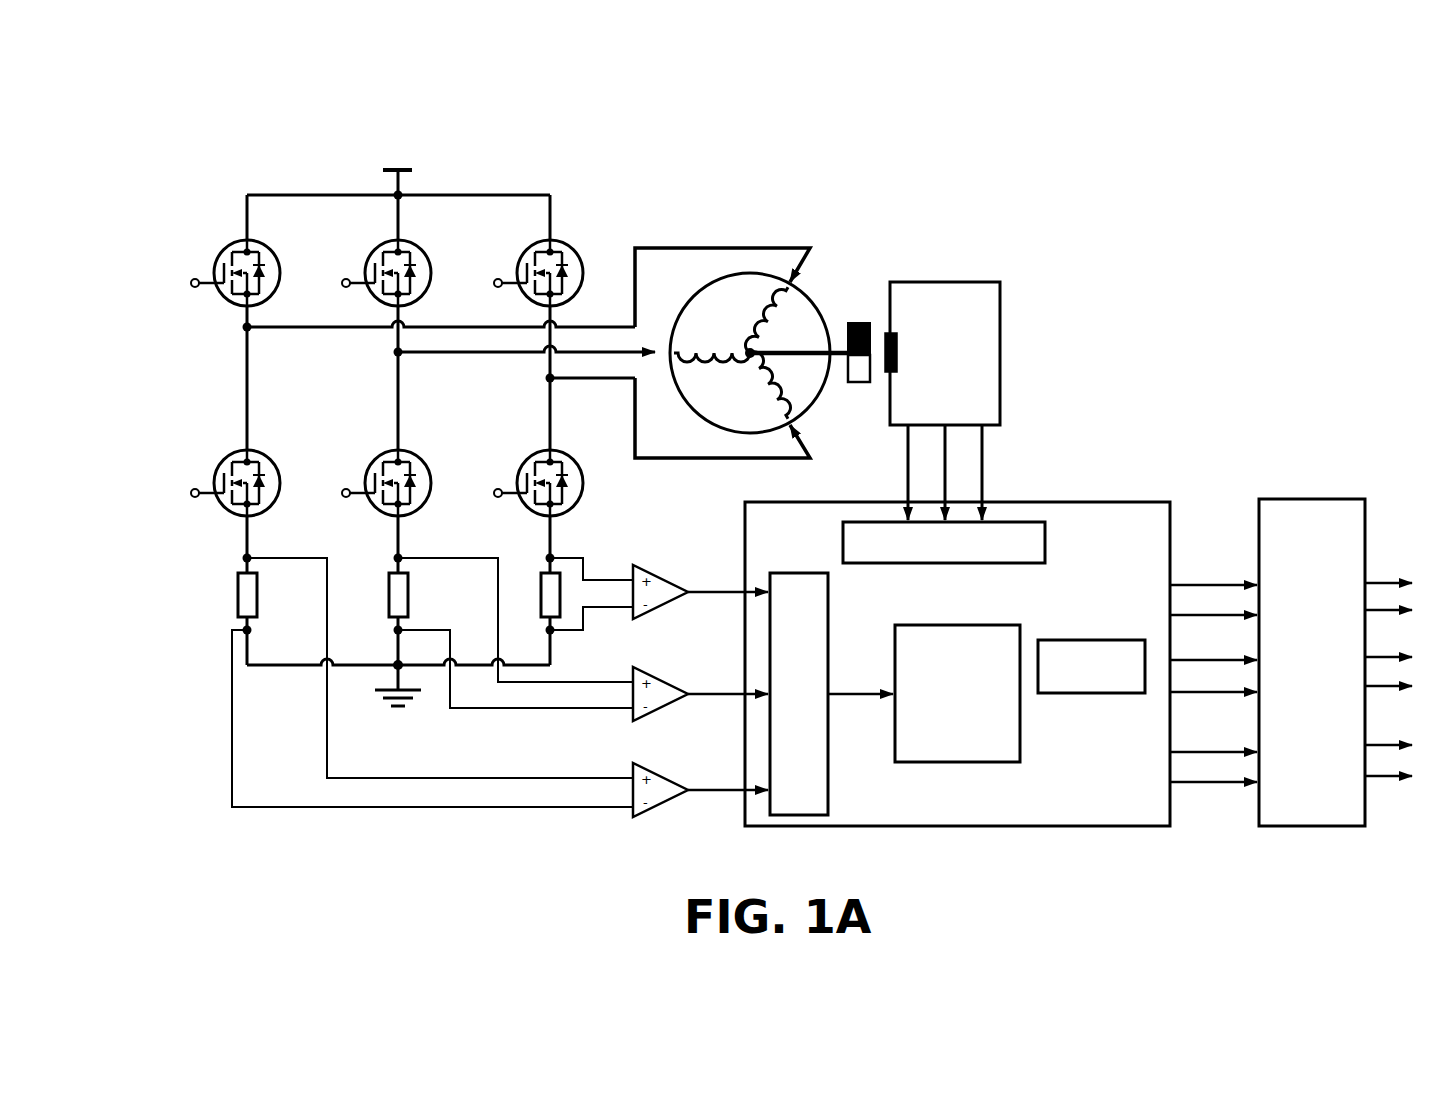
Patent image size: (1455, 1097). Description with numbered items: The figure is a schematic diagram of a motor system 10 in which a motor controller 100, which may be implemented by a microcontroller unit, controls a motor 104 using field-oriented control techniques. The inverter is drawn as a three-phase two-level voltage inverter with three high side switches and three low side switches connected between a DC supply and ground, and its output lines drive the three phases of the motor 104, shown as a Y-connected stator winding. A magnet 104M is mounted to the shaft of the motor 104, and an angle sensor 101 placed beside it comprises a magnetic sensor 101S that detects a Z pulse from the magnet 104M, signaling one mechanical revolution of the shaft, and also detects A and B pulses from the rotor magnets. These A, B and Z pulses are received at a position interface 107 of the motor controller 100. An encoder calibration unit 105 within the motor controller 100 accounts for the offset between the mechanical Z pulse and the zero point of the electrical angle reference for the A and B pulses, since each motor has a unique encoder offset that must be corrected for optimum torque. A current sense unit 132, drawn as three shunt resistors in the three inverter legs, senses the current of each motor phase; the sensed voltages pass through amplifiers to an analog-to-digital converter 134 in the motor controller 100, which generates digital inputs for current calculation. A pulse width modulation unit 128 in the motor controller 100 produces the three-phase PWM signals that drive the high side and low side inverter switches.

The motor system 10 is at (1173, 147).
The motor controller 100 is at (1105, 502).
The angle sensor 101 is at (1001, 352).
The magnetic sensor 101S is at (886, 372).
The motor 104 is at (810, 298).
The magnet 104M is at (870, 322).
The encoder calibration unit 105 is at (950, 762).
The position interface 107 is at (995, 522).
The pulse width modulation (PWM) unit 128 is at (1085, 640).
The current sense unit 132 is at (187, 663).
The analog-to-digital converter (ADC) 134 is at (786, 573).